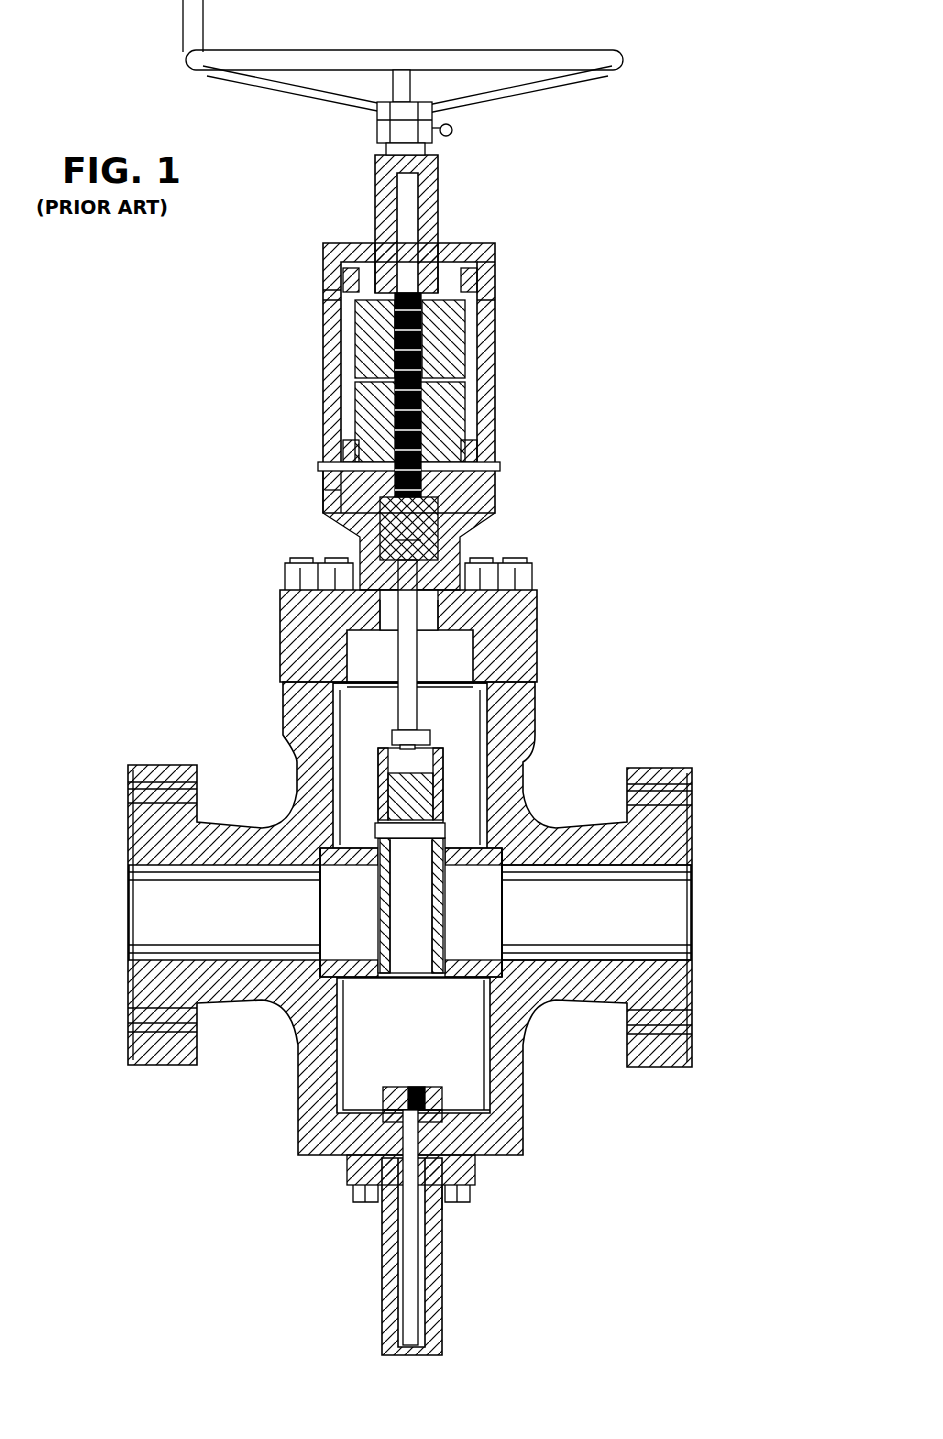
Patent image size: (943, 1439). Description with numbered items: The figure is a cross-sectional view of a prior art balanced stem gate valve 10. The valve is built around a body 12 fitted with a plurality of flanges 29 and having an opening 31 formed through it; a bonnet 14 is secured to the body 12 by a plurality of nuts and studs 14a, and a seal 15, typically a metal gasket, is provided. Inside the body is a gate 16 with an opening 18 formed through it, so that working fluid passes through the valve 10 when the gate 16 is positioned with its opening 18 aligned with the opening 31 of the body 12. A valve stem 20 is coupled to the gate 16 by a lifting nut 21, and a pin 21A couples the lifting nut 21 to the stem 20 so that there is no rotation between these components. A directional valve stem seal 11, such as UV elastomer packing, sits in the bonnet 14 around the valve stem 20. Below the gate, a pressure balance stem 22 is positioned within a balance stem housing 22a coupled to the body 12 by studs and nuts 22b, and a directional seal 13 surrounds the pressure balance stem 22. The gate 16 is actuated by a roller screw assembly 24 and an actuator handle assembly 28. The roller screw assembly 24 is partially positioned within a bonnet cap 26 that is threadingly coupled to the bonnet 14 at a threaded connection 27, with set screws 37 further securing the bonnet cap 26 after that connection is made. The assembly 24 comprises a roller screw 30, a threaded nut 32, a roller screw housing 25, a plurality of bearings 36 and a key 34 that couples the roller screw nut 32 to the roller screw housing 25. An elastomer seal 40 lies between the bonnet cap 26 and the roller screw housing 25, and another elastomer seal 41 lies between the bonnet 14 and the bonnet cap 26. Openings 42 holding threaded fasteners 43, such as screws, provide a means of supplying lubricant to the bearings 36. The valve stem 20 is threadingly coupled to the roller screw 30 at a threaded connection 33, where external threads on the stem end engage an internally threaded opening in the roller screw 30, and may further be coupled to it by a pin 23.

The balanced stem gate valve 10 is at (256, 633).
The directional valve stem seal 11 is at (395, 580).
The body 12 is at (525, 790).
The directional seal 13 is at (444, 1210).
The bonnet 14 is at (530, 620).
The nuts and studs 14a is at (535, 560).
The seal 15 is at (480, 685).
The gate 16 is at (440, 1098).
The opening 18 is at (415, 1093).
The valve stem 20 is at (397, 695).
The lifting nut 21 is at (380, 810).
The pin 21A is at (447, 838).
The pressure balance stem 22 is at (425, 1262).
The balance stem housing 22a is at (388, 1270).
The studs and nuts 22b is at (352, 1205).
The pin 23 is at (455, 535).
The roller screw assembly 24 is at (345, 378).
The roller screw housing 25 is at (440, 240).
The bonnet cap 26 is at (493, 290).
The threaded connection 27 is at (498, 500).
The actuator handle assembly 28 is at (588, 92).
The flanges 29 is at (675, 770).
The roller screw 30 is at (460, 412).
The opening 31 is at (675, 872).
The threaded nut 32 is at (380, 335).
The threaded connection 33 is at (397, 548).
The key 34 is at (440, 350).
The bearings 36 is at (352, 285).
The set screws 37 is at (327, 500).
The elastomer seal 40 is at (378, 240).
The elastomer seal 41 is at (322, 485).
The openings 42 is at (340, 465).
The threaded fasteners 43 is at (325, 297).